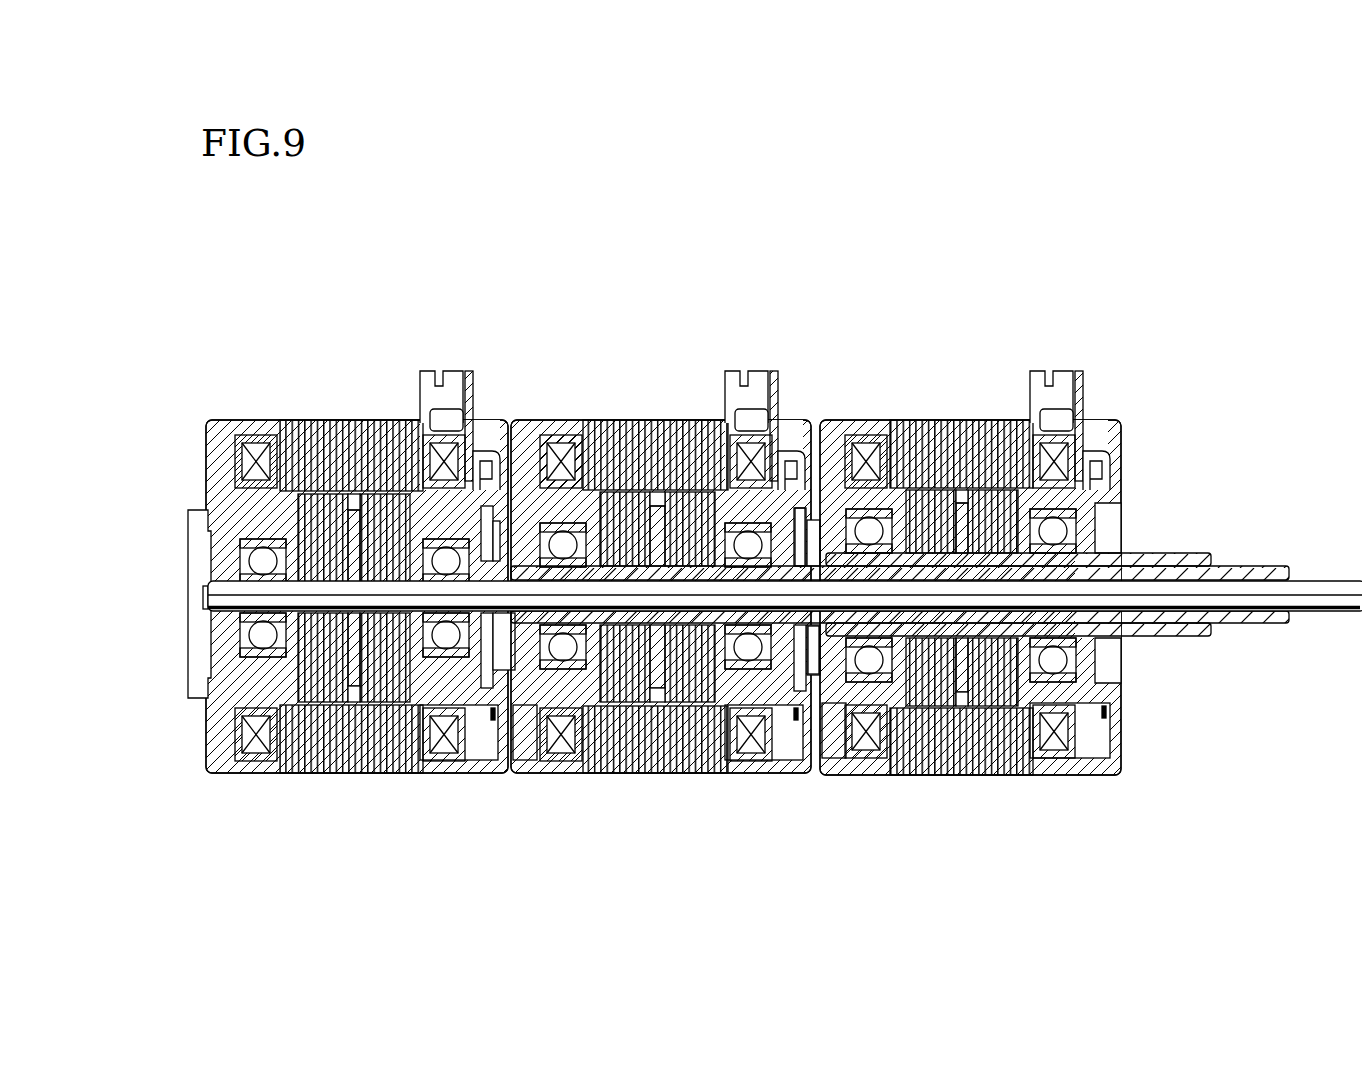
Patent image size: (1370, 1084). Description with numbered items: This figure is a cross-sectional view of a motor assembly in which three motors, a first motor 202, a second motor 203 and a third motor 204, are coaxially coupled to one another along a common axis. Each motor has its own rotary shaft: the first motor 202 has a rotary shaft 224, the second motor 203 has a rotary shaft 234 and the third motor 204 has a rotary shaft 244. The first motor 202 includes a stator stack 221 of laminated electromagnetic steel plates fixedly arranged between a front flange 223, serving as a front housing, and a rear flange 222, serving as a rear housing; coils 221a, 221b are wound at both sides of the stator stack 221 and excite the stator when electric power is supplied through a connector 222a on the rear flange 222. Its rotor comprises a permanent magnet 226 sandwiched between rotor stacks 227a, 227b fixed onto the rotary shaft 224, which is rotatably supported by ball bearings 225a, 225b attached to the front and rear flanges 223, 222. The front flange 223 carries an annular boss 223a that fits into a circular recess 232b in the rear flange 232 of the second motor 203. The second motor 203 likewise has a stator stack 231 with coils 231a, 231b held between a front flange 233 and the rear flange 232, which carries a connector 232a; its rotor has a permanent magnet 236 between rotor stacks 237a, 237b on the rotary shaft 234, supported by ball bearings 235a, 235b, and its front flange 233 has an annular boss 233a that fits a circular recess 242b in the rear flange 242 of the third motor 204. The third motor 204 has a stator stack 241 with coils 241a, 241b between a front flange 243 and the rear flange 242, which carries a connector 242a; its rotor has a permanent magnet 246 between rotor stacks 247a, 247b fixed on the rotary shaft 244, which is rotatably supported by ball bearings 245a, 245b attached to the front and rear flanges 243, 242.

The first motor 202 is at (931, 385).
The second motor 203 is at (626, 385).
The third motor 204 is at (323, 385).
The stator stack 221 is at (957, 748).
The coil 221a is at (862, 438).
The coil 221b is at (1045, 742).
The rear flange 222 is at (1082, 768).
The connector 222a is at (1072, 398).
The front flange 223 is at (835, 768).
The annular boss 223a is at (815, 700).
The rotary shaft 224 is at (1165, 546).
The ball bearing 225a is at (858, 520).
The ball bearing 225b is at (1080, 520).
The permanent magnet 226 is at (955, 500).
The rotor stack 227a is at (925, 495).
The rotor stack 227b is at (987, 505).
The stator stack 231 is at (647, 748).
The coil 231a is at (557, 438).
The coil 231b is at (738, 742).
The rear flange 232 is at (768, 768).
The connector 232a is at (740, 537).
The circular recess 232b is at (790, 690).
The front flange 233 is at (528, 768).
The annular boss 233a is at (515, 700).
The rotary shaft 234 is at (1240, 563).
The ball bearing 235a is at (553, 535).
The ball bearing 235b is at (768, 398).
The permanent magnet 236 is at (650, 503).
The rotor stack 237a is at (622, 498).
The rotor stack 237b is at (682, 508).
The stator stack 241 is at (333, 748).
The coil 241a is at (252, 438).
The coil 241b is at (430, 742).
The rear flange 242 is at (470, 766).
The connector 242a is at (437, 545).
The circular recess 242b is at (480, 690).
The front flange 243 is at (212, 767).
The rotary shaft 244 is at (1322, 578).
The ball bearing 245a is at (250, 548).
The ball bearing 245b is at (463, 398).
The permanent magnet 246 is at (347, 505).
The rotor stack 247a is at (315, 498).
The rotor stack 247b is at (375, 508).